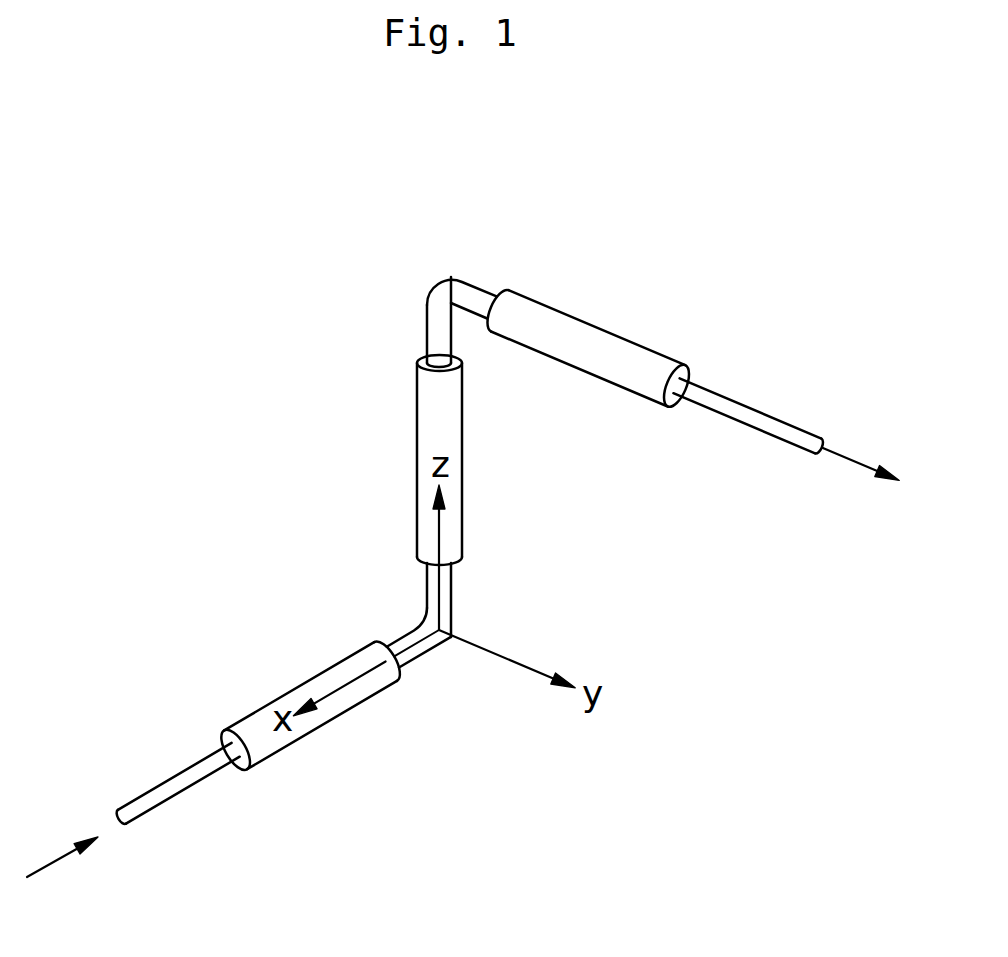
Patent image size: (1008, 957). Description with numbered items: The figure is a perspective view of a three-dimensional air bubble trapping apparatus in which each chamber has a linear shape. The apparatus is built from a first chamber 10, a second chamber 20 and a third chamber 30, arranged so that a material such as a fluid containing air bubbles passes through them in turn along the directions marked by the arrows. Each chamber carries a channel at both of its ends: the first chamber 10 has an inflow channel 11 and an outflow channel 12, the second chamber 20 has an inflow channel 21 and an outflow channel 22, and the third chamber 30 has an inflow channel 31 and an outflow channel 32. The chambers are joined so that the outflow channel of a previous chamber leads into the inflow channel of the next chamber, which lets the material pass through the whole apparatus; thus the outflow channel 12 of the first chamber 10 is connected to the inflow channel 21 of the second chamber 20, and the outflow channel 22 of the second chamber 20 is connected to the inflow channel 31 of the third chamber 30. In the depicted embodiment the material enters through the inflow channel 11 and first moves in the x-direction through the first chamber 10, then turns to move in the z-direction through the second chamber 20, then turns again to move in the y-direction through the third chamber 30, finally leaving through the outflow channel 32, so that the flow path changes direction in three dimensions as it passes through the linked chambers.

The first chamber 10 is at (267, 720).
The inflow channel 11 is at (153, 800).
The outflow channel 12 is at (403, 640).
The second chamber 20 is at (423, 447).
The inflow channel 21 is at (453, 588).
The outflow channel 22 is at (431, 328).
The third chamber 30 is at (587, 333).
The inflow channel 31 is at (480, 290).
The outflow channel 32 is at (753, 417).